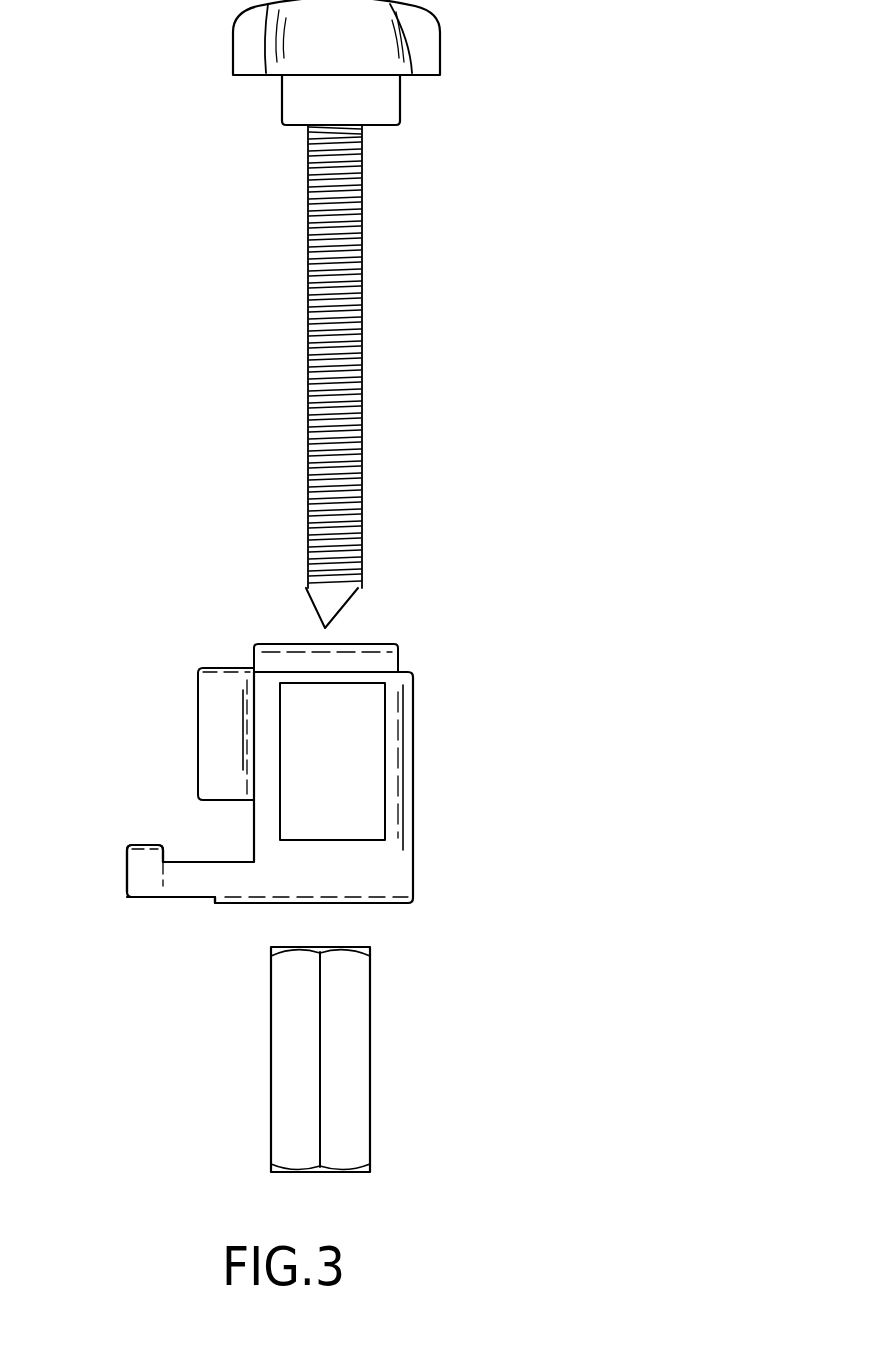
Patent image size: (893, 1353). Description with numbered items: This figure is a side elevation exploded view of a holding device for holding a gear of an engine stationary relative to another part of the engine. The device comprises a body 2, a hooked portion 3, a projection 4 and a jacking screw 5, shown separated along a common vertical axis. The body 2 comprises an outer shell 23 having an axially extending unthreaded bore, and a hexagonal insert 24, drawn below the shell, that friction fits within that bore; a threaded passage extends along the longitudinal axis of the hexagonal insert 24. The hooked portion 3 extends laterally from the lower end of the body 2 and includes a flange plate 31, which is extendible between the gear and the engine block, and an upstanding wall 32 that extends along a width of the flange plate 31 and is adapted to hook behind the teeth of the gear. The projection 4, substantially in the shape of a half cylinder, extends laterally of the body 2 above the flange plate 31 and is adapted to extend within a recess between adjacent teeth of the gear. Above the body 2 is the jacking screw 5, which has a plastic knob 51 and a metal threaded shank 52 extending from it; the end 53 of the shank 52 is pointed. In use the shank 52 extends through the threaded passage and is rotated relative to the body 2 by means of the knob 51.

The body 2 is at (297, 816).
The outer shell 23 is at (412, 722).
The hexagonal insert 24 is at (355, 1072).
The hooked portion 3 is at (225, 873).
The flange plate 31 is at (214, 893).
The upstanding wall 32 is at (137, 844).
The projection 4 is at (196, 707).
The jacking screw 5 is at (394, 319).
The plastic knob 51 is at (441, 57).
The threaded shank 52 is at (365, 297).
The pointed end 53 is at (327, 624).